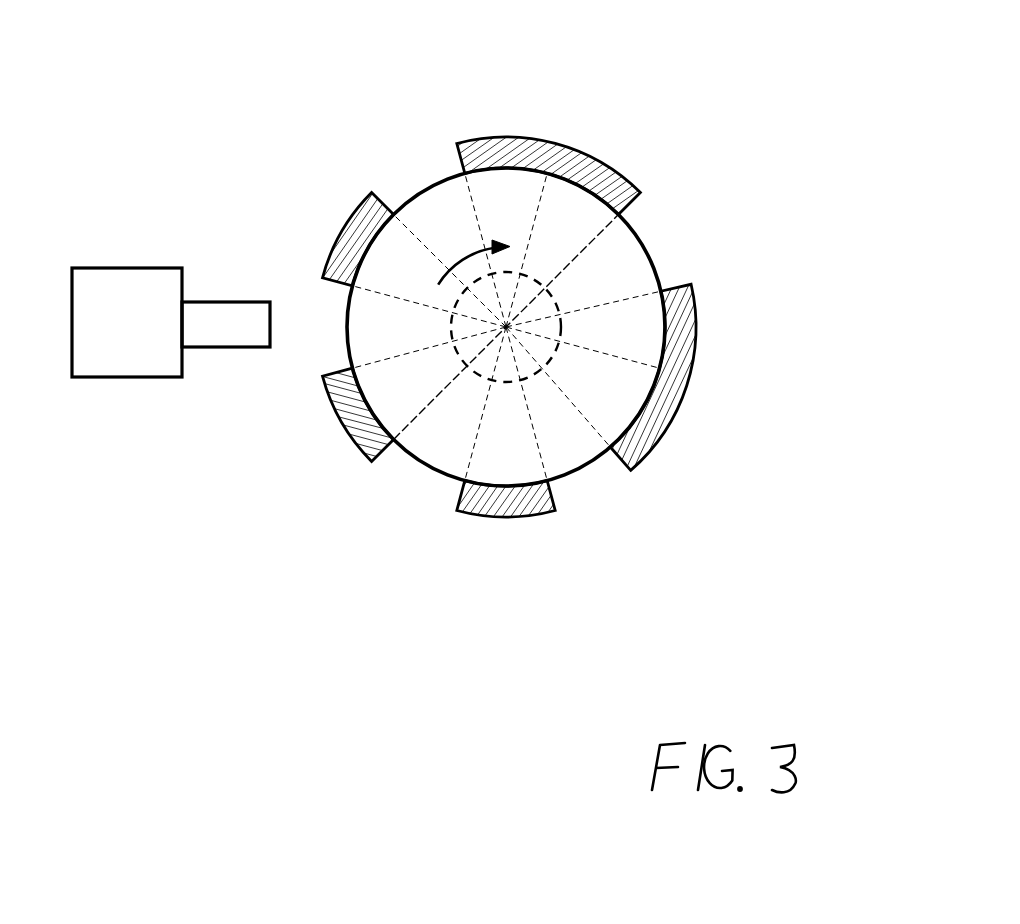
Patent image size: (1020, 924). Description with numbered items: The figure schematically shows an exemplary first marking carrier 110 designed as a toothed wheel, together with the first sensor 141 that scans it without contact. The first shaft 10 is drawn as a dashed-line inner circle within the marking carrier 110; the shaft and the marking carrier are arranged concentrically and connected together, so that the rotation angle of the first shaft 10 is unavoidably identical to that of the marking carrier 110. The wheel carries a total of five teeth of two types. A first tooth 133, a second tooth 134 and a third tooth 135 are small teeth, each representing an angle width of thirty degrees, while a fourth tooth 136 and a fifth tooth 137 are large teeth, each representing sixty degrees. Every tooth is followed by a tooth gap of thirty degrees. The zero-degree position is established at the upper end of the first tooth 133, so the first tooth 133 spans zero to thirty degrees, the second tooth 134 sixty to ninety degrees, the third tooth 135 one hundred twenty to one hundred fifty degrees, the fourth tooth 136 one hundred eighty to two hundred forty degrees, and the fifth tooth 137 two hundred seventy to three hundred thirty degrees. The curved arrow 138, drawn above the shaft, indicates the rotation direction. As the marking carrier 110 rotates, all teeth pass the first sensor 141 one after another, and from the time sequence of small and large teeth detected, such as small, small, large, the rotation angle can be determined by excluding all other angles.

The first shaft 10 is at (482, 378).
The first marking carrier 110 is at (623, 277).
The first tooth 133 is at (355, 244).
The second tooth 134 is at (345, 402).
The third tooth 135 is at (510, 503).
The fourth tooth 136 is at (675, 373).
The fifth tooth 137 is at (535, 152).
The curved arrow 138 is at (470, 256).
The first sensor 141 is at (117, 352).